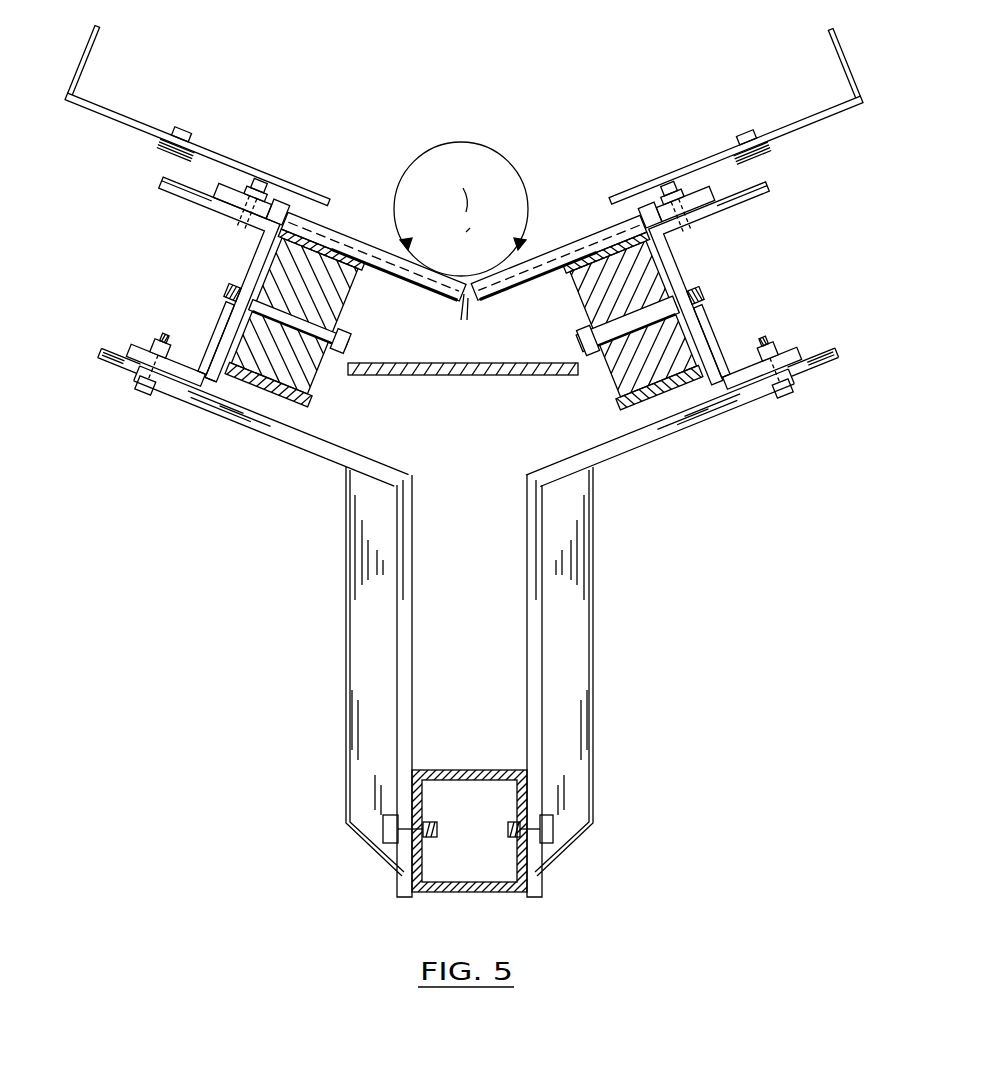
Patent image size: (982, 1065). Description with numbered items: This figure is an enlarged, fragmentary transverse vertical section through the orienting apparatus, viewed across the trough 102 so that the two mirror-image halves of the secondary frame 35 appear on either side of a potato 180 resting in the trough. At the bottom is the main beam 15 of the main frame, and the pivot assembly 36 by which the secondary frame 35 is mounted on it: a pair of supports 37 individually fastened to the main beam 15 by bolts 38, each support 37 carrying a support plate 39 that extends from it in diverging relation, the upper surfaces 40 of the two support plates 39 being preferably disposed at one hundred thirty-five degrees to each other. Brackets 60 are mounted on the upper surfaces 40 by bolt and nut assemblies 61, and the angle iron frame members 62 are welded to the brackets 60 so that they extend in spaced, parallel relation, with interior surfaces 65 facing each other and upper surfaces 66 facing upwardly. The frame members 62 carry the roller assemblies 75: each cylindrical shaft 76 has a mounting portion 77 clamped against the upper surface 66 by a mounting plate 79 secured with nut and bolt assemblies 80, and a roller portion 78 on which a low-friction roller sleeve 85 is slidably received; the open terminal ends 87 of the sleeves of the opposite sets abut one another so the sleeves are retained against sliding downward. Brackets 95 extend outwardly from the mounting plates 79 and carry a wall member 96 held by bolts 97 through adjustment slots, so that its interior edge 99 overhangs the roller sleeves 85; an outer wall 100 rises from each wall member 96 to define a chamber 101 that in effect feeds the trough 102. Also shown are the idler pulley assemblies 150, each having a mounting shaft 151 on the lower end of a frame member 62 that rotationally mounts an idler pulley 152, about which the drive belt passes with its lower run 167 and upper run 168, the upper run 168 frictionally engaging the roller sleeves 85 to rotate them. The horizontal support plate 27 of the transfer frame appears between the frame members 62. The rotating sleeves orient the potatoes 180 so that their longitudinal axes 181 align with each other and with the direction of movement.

The main beam 15 is at (497, 893).
The support plate 27 is at (516, 376).
The secondary frame 35 is at (150, 405).
The pivot assembly 36 is at (372, 863).
The supports 37 is at (346, 638).
The bolts 38 is at (384, 831).
The support plate 39 is at (262, 428).
The upper surfaces 40 is at (113, 345).
The brackets 60 is at (222, 310).
The bolt and nut assemblies 61 is at (141, 385).
The angle iron frame members 62 is at (226, 207).
The interior surfaces 65 is at (346, 291).
The upper surfaces 66 is at (235, 180).
The roller assemblies 75 is at (411, 243).
The cylindrical shaft 76 is at (367, 248).
The mounting portion 77 is at (272, 204).
The roller portion 78 is at (427, 268).
The mounting plates 79 is at (249, 176).
The nut and bolt assemblies 80 is at (262, 180).
The roller sleeve 85 is at (402, 250).
The terminal end 87 is at (461, 317).
The brackets 95 is at (162, 148).
The wall member 96 is at (100, 117).
The bolts 97 is at (183, 128).
The interior edge 99 is at (318, 208).
The outer wall 100 is at (87, 38).
The chamber 101 is at (462, 112).
The trough 102 is at (470, 228).
The idler pulley assemblies 150 is at (333, 374).
The mounting shaft 151 is at (353, 340).
The idler pulley 152 is at (318, 383).
The lower run 167 is at (250, 388).
The upper run 168 is at (315, 238).
The potatoes 180 is at (522, 178).
The longitudinal axes 181 is at (450, 190).